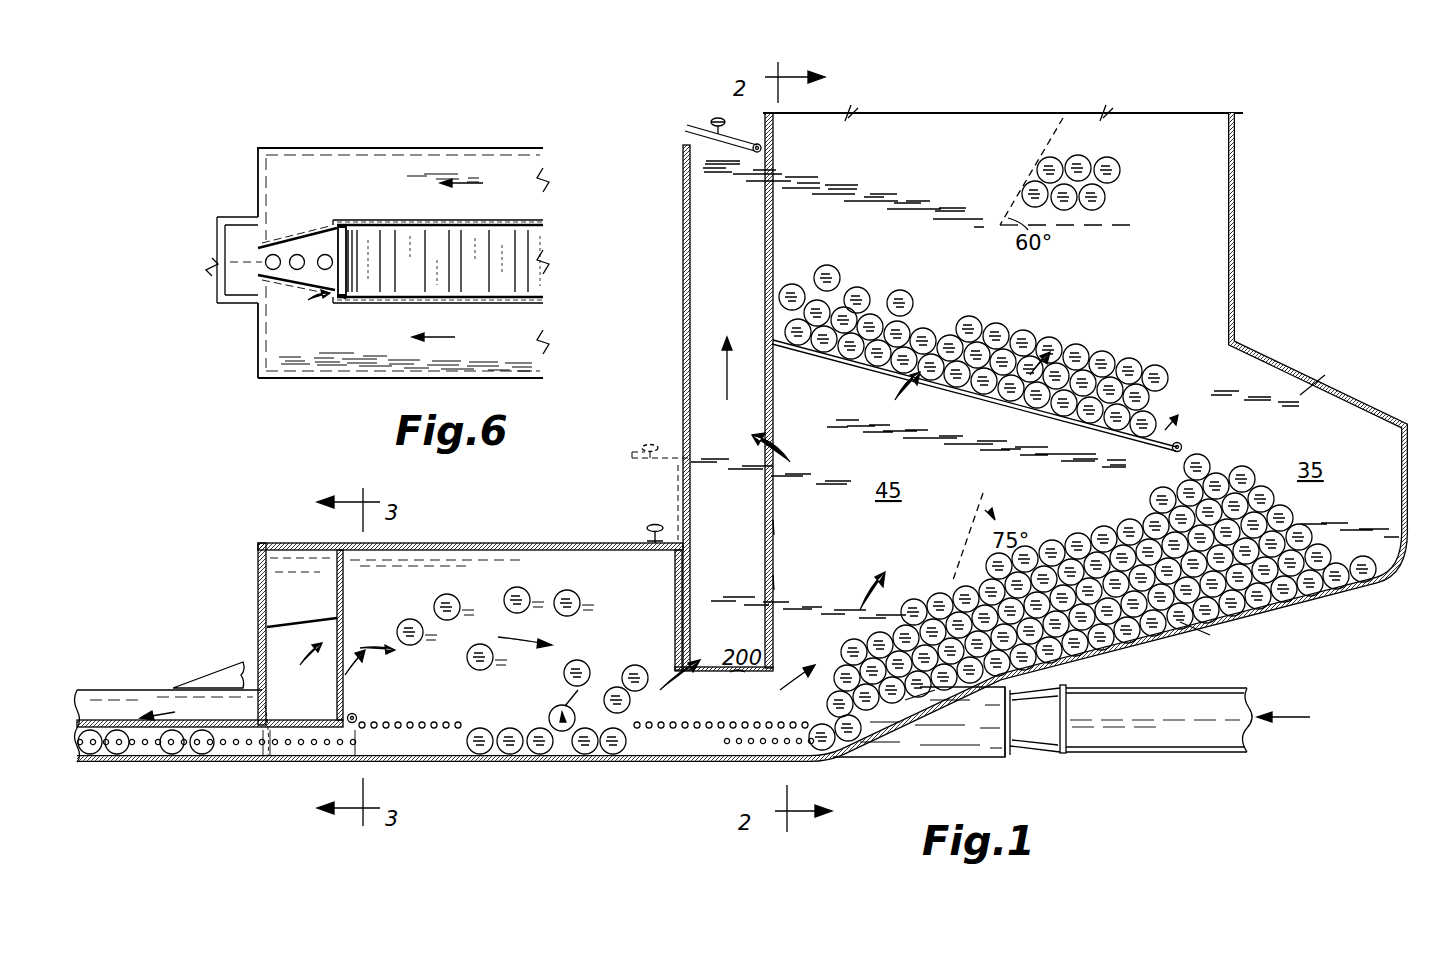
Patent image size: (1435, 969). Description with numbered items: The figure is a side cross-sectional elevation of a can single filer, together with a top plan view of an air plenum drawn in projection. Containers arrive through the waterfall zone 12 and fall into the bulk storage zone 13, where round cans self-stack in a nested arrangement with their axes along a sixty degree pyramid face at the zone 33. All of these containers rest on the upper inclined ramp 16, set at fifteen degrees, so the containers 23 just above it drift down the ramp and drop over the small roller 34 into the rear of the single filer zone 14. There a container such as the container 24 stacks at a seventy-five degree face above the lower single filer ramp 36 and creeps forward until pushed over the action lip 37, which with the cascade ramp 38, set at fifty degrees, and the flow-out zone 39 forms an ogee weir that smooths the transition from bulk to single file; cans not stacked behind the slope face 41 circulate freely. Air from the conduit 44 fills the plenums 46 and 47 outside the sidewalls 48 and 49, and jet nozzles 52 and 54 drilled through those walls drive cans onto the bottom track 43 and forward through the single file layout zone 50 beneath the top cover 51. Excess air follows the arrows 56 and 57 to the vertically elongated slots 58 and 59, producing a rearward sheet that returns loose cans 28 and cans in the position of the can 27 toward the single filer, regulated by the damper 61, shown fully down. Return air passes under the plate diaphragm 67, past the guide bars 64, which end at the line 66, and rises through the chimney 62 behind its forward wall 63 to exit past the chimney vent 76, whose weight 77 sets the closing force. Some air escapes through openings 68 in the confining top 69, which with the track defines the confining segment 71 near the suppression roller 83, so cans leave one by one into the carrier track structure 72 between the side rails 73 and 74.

In FIG. 1, the waterfall zone 12 is at (1258, 38).
In FIG. 1, the bulk storage zone 13 is at (1258, 140).
In FIG. 1, the single filer zone 14 is at (1377, 360).
In FIG. 1, the upper inclined ramp 16 is at (1040, 395).
In FIG. 1, the containers 23 is at (940, 335).
In FIG. 1, the container 24 is at (1300, 525).
In FIG. 1, the can 27 is at (555, 707).
In FIG. 1, the cans 28 is at (630, 668).
In FIG. 1, the zone 33 is at (1040, 170).
In FIG. 1, the roller 34 is at (1172, 452).
In FIG. 1, the lower single filer ramp 36 is at (1195, 630).
In FIG. 1, the action lip 37 is at (915, 705).
In FIG. 1, the cascade ramp 38 is at (880, 737).
In FIG. 1, the flow-out zone 39 is at (812, 752).
In FIG. 1, the slope face 41 is at (985, 497).
In FIG. 1, the bottom track 43 is at (670, 765).
In FIG. 1, the conduit 44 is at (1190, 732).
In FIG. 1, the plenum 46 is at (1000, 760).
In FIG. 6, the plenum 46 is at (483, 162).
In FIG. 6, the plenum 47 is at (365, 365).
In FIG. 1, the sidewall 48 is at (1300, 392).
In FIG. 6, the sidewall 48 is at (483, 222).
In FIG. 6, the sidewall 49 is at (478, 300).
In FIG. 1, the single file layout zone 50 is at (493, 670).
In FIG. 6, the single file layout zone 50 is at (440, 261).
In FIG. 1, the top cover 51 is at (468, 543).
In FIG. 1, the jet nozzles 52 is at (685, 720).
In FIG. 1, the jet nozzles 54 is at (748, 770).
In FIG. 1, the arrow 56 is at (325, 668).
In FIG. 6, the arrow 56 is at (324, 229).
In FIG. 6, the arrow 57 is at (312, 318).
In FIG. 6, the slot 58 is at (350, 228).
In FIG. 6, the slot 59 is at (345, 300).
In FIG. 1, the damper 61 is at (647, 530).
In FIG. 1, the chimney 62 is at (683, 328).
In FIG. 1, the forward wall 63 is at (683, 405).
In FIG. 1, the guide bars 64 is at (773, 420).
In FIG. 1, the line 66 is at (773, 532).
In FIG. 1, the plate diaphragm 67 is at (773, 590).
In FIG. 1, the openings 68 is at (275, 748).
In FIG. 6, the openings 68 is at (290, 272).
In FIG. 1, the confining top 69 is at (312, 720).
In FIG. 6, the confining top 69 is at (309, 273).
In FIG. 1, the confining segment 71 is at (310, 765).
In FIG. 1, the carrier track structure 72 is at (130, 722).
In FIG. 1, the side rail 73 is at (120, 745).
In FIG. 1, the side rail 74 is at (140, 762).
In FIG. 1, the chimney vent 76 is at (695, 125).
In FIG. 1, the weight 77 is at (718, 118).
In FIG. 1, the suppression roller 83 is at (358, 713).
In FIG. 6, the suppression roller 83 is at (352, 246).